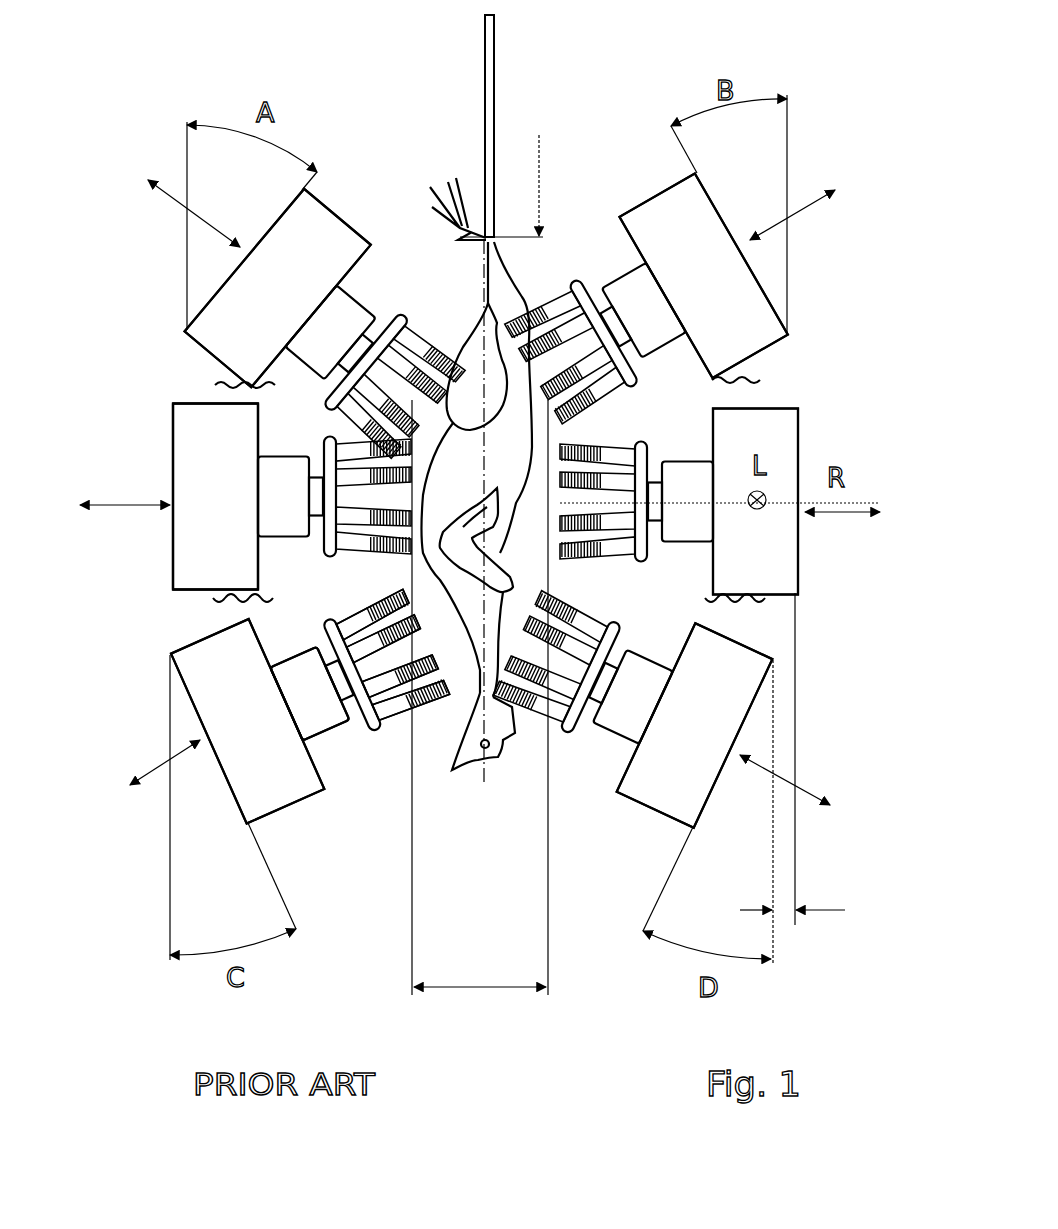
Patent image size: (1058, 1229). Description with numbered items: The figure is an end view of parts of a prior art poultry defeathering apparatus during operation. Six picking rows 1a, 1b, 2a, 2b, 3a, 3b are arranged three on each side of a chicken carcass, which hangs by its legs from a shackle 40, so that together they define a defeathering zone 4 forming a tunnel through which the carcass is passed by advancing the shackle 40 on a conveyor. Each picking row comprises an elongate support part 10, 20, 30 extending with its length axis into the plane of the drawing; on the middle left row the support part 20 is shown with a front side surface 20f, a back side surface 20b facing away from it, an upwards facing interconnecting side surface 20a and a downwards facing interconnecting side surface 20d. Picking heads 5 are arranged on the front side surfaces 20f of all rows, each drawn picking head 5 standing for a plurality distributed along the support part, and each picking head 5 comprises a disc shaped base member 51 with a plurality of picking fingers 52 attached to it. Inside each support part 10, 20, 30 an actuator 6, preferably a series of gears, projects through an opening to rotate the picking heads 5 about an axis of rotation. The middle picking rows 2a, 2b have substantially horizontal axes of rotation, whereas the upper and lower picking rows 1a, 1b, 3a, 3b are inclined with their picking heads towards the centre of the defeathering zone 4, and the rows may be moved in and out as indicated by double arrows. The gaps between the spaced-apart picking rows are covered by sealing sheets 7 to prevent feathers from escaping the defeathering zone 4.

The upper left picking row 1a is at (340, 195).
The upper right picking row 1b is at (650, 170).
The middle left picking row 2a is at (155, 408).
The middle right picking row 2b is at (810, 408).
The lower left picking row 3a is at (185, 712).
The lower right picking row 3b is at (785, 674).
The defeathering zone 4 is at (492, 887).
The picking head 5 is at (365, 745).
The disc shaped base member 51 is at (385, 735).
The picking fingers 52 is at (428, 730).
The actuator 6 is at (235, 740).
The sealing sheets 7 is at (215, 385).
The support part 10 is at (240, 318).
The support part 20 is at (205, 500).
The upper side of housing 20a is at (215, 415).
The back side surface 20b is at (215, 540).
The front side surface 20f is at (255, 565).
The second downwards facing interconnecting side surface 20d is at (200, 620).
The support part 30 is at (240, 745).
The shackle 40 is at (497, 95).